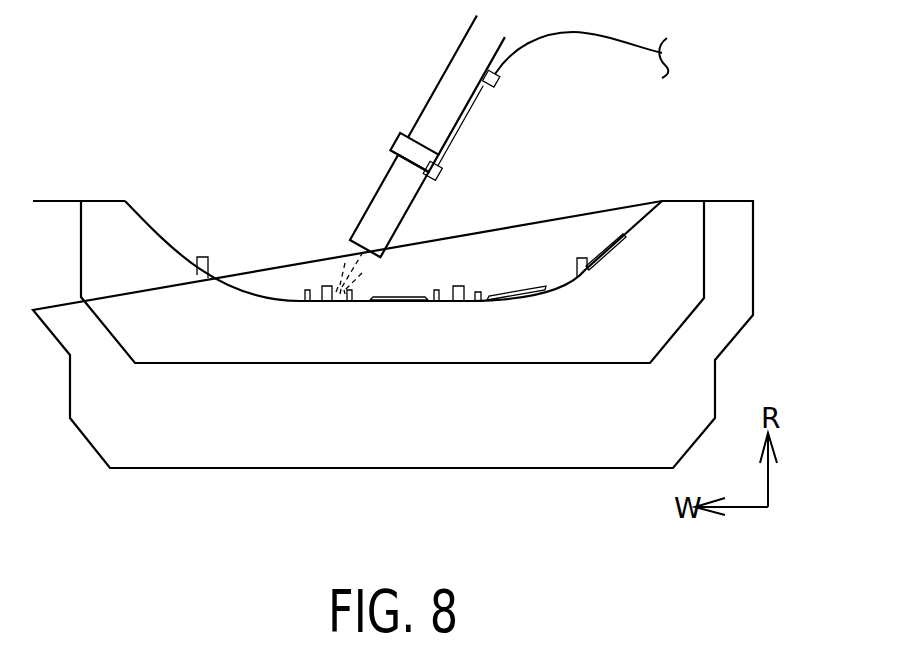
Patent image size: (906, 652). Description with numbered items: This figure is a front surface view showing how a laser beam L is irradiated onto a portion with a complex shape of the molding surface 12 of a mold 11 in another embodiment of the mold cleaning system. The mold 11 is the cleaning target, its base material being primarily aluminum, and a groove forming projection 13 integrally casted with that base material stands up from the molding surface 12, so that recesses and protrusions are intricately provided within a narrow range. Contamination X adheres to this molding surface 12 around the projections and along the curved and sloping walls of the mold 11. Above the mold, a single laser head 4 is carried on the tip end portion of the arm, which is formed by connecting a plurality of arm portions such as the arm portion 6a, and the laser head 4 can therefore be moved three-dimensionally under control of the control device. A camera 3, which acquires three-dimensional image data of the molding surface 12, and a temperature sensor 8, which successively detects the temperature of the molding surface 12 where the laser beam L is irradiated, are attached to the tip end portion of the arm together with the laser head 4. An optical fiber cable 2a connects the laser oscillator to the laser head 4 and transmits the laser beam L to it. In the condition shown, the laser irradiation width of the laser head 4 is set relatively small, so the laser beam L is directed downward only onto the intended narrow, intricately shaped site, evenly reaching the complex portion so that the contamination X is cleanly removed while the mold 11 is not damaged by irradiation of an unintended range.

The mold 11 is at (107, 199).
The molding surface 12 is at (160, 237).
The groove forming projection 13 is at (307, 290).
The camera 3 is at (396, 141).
The laser head 4 is at (375, 195).
The arm portion 6a is at (440, 97).
The temperature sensor 8 is at (442, 175).
The optical fiber cable 2a is at (583, 34).
The laser beam L is at (358, 266).
The contamination X is at (310, 302).